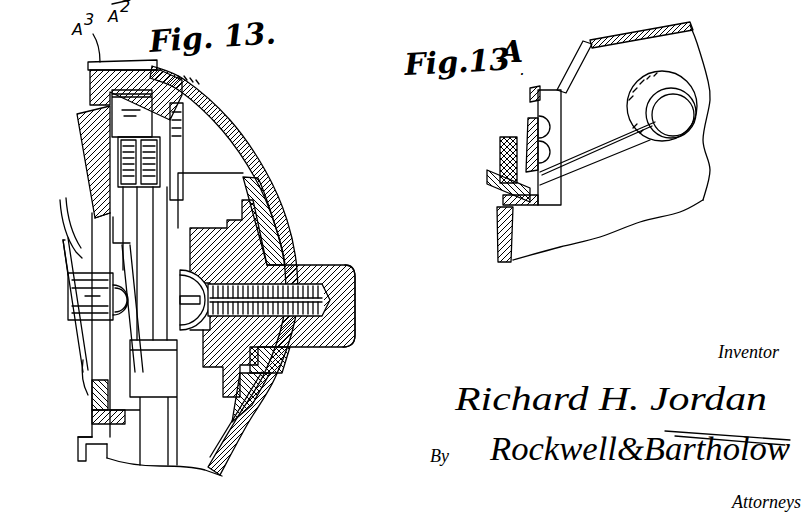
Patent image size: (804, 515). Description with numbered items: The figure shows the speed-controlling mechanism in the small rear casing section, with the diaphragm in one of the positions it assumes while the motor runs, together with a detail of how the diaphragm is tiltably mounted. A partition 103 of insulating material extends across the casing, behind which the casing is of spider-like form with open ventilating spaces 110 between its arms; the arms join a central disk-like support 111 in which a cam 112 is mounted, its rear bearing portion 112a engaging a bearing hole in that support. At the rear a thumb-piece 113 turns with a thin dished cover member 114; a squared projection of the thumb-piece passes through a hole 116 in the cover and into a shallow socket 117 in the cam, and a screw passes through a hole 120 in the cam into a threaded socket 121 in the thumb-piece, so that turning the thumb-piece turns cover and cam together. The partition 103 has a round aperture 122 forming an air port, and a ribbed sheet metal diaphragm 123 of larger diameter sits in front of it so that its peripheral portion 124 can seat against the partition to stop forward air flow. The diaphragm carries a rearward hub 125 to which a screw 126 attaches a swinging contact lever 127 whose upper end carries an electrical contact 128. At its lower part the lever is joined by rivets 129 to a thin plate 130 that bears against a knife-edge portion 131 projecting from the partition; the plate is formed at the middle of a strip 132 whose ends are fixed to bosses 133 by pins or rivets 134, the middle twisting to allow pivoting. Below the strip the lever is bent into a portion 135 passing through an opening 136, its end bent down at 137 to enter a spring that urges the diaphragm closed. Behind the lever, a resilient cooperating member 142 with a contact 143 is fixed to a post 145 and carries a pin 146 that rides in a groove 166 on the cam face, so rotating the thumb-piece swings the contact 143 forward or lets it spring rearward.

In FIG. 13, the partition 103 is at (90, 126).
In FIG. 13A, the partition 103 is at (688, 52).
In FIG. 13, the ventilating spaces 110 is at (200, 117).
In FIG. 13, the disk-like support 111 is at (262, 190).
In FIG. 13, the cam 112 is at (268, 233).
In FIG. 13, the rear bearing portion 112a is at (280, 204).
In FIG. 13, the thumb-piece 113 is at (353, 282).
In FIG. 13, the cover member 114 is at (182, 156).
In FIG. 13, the hole 116 is at (331, 279).
In FIG. 13, the shallow socket 117 is at (268, 352).
In FIG. 13, the hole 120 is at (262, 372).
In FIG. 13, the threaded socket 121 is at (318, 309).
In FIG. 13, the aperture 122 is at (95, 218).
In FIG. 13A, the aperture 122 is at (573, 70).
In FIG. 13, the diaphragm 123 is at (76, 243).
In FIG. 13, the peripheral portion 124 is at (64, 212).
In FIG. 13, the hub 125 is at (76, 284).
In FIG. 13, the screw 126 is at (127, 298).
In FIG. 13, the swinging contact lever 127 is at (107, 327).
In FIG. 13A, the swinging contact lever 127 is at (562, 107).
In FIG. 13, the electrical contact 128 is at (178, 140).
In FIG. 13, the rivets 129 is at (105, 360).
In FIG. 13A, the rivets 129 is at (547, 158).
In FIG. 13, the plate 130 is at (90, 387).
In FIG. 13A, the plate 130 is at (500, 196).
In FIG. 13, the knife-edge portion 131 is at (93, 412).
In FIG. 13A, the knife-edge portion 131 is at (500, 152).
In FIG. 13A, the strip 132 is at (602, 156).
In FIG. 13A, the bosses 133 is at (672, 80).
In FIG. 13A, the pins or rivets 134 is at (677, 115).
In FIG. 13, the portion 135 is at (85, 432).
In FIG. 13A, the portion 135 is at (488, 178).
In FIG. 13, the opening 136 is at (98, 450).
In FIG. 13A, the opening 136 is at (505, 205).
In FIG. 13, the downward bend 137 is at (80, 450).
In FIG. 13, the cooperating member 142 is at (170, 192).
In FIG. 13, the contact 143 is at (160, 152).
In FIG. 13, the post 145 is at (143, 402).
In FIG. 13, the pin 146 is at (193, 223).
In FIG. 13, the groove 166 is at (195, 345).